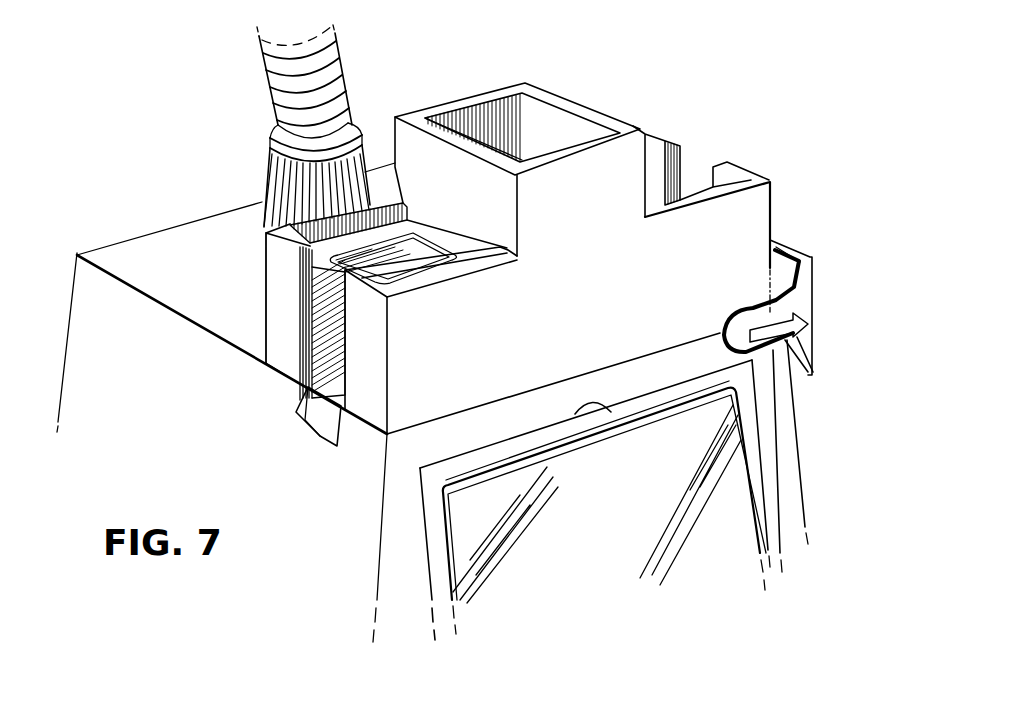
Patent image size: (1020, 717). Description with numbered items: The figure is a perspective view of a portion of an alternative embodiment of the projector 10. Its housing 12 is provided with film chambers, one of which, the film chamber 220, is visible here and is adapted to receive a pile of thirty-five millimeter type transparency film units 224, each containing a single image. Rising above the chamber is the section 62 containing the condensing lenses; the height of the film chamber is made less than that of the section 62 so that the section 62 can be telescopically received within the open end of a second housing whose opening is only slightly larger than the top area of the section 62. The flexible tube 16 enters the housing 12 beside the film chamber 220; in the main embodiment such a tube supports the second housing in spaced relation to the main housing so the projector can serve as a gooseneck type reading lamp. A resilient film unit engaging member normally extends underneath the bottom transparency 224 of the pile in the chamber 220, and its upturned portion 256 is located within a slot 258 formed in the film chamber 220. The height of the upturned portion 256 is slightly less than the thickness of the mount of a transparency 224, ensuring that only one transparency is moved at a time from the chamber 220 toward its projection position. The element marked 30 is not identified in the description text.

The projector 10 is at (710, 131).
The housing 12 is at (228, 397).
The flexible tube 16 is at (285, 97).
The windshield 30 is at (611, 485).
The section containing the condensing lenses 62 is at (583, 298).
The film chamber 220 is at (278, 265).
The transparency film unit 224 is at (750, 222).
The upturned portion 256 is at (320, 418).
The slot 258 is at (300, 384).